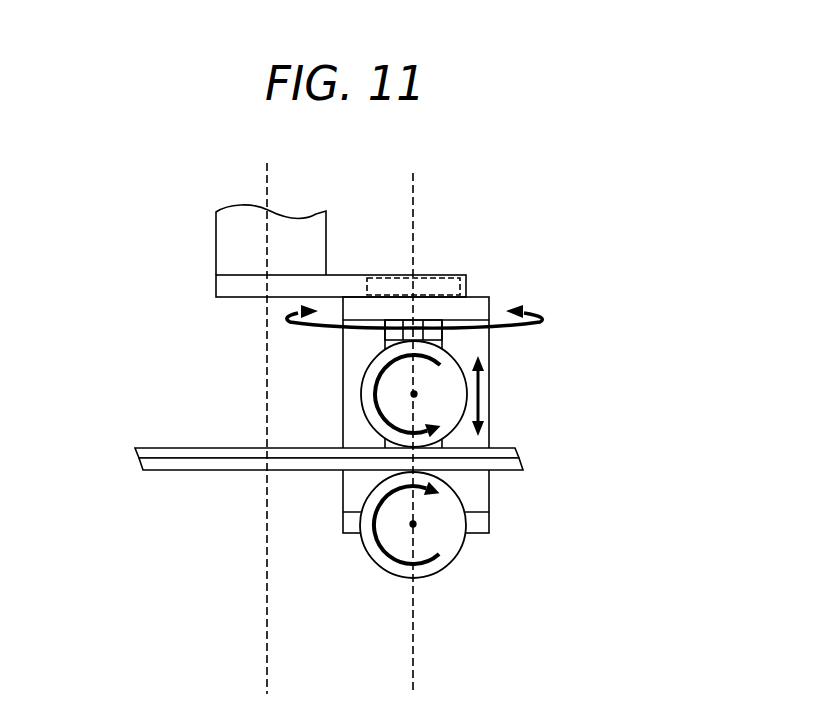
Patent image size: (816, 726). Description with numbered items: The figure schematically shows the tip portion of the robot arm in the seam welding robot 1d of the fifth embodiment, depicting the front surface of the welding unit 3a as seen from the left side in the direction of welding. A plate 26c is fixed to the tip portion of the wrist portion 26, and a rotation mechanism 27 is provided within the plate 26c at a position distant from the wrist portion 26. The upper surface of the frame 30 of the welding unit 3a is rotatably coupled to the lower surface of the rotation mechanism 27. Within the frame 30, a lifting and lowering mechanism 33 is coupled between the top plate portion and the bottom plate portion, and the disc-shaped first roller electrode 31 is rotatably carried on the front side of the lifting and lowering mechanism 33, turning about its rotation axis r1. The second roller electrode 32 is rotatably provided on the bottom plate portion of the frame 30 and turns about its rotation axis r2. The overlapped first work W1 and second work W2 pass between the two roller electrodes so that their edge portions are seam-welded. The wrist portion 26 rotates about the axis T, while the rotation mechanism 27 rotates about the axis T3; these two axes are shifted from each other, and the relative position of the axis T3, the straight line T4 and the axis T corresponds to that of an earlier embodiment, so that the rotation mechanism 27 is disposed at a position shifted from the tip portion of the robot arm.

The seam welding robot 1d is at (560, 193).
The welding unit 3a is at (566, 394).
The wrist portion 26 is at (230, 238).
The plate 26c is at (230, 286).
The rotation mechanism 27 is at (462, 282).
The frame 30 is at (475, 492).
The first roller electrode 31 is at (372, 382).
The second roller electrode 32 is at (378, 548).
The lifting and lowering mechanism 33 is at (428, 338).
The rotation axis r1 is at (412, 394).
The rotation axis r2 is at (411, 524).
The first work W1 is at (147, 452).
The second work W2 is at (147, 458).
The axis T is at (266, 182).
The axis T3 is at (414, 180).
The straight line T4 is at (414, 645).